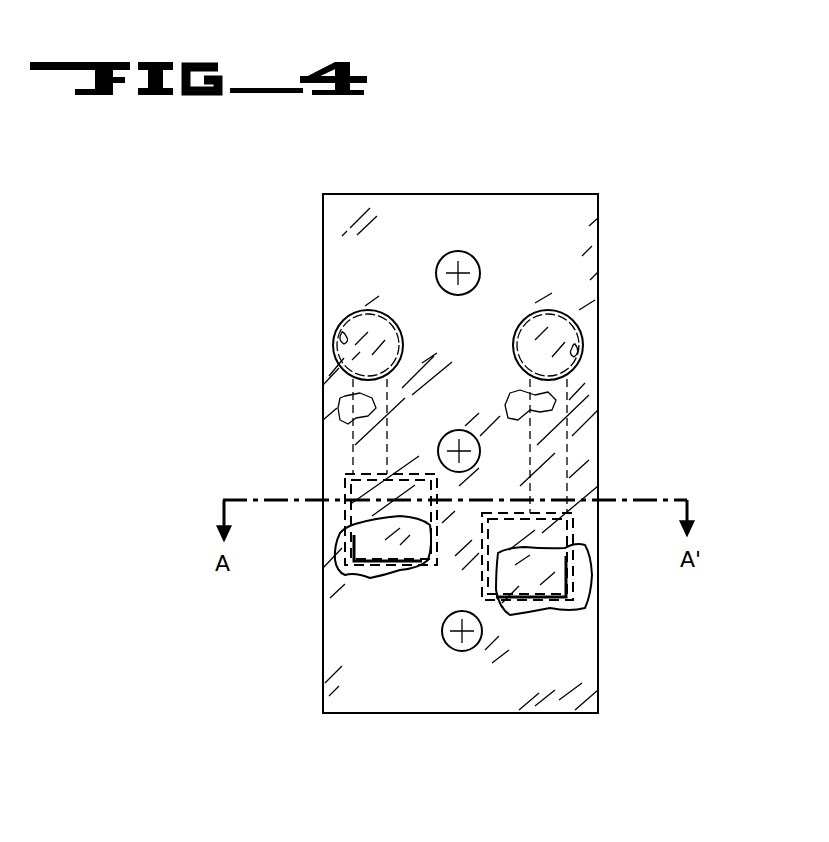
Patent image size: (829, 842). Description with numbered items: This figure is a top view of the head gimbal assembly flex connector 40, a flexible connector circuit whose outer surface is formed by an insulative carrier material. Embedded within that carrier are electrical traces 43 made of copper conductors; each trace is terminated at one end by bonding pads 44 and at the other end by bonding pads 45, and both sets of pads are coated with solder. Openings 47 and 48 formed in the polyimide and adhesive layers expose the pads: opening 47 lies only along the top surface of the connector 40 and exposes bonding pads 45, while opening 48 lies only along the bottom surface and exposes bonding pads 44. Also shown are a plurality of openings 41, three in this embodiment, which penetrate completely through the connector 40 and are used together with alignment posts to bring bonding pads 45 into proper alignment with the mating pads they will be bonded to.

The HGA flex connector 40 is at (600, 412).
The openings 41 is at (468, 262).
The electrical traces 43 is at (358, 411).
The bonding pads 44 is at (360, 325).
The bonding pads 45 is at (352, 575).
The opening 47 is at (340, 338).
The opening 48 is at (352, 550).